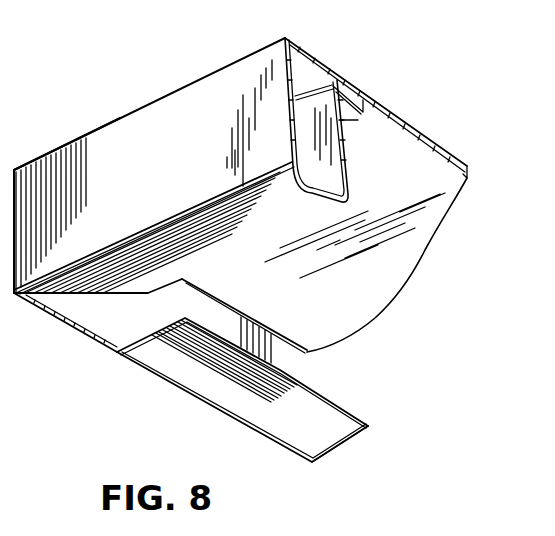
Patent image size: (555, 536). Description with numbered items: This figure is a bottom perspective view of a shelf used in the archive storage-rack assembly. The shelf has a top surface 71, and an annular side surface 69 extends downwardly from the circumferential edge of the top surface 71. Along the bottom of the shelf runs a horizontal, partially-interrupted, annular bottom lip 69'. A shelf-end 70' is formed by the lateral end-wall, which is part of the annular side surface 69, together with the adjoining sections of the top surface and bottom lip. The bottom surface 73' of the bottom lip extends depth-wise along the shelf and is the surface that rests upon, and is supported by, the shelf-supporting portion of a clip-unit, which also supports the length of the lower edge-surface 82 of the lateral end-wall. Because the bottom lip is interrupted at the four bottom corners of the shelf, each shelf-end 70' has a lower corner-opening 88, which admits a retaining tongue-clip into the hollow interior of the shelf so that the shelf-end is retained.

The annular side surface 69 is at (240, 213).
The bottom lip 69' is at (336, 469).
The shelf-end 70' is at (65, 124).
The top surface 71 is at (408, 130).
The lower edge-surface 82 is at (58, 322).
The corner-opening 88 is at (102, 322).
The bottom surface 73' is at (242, 391).